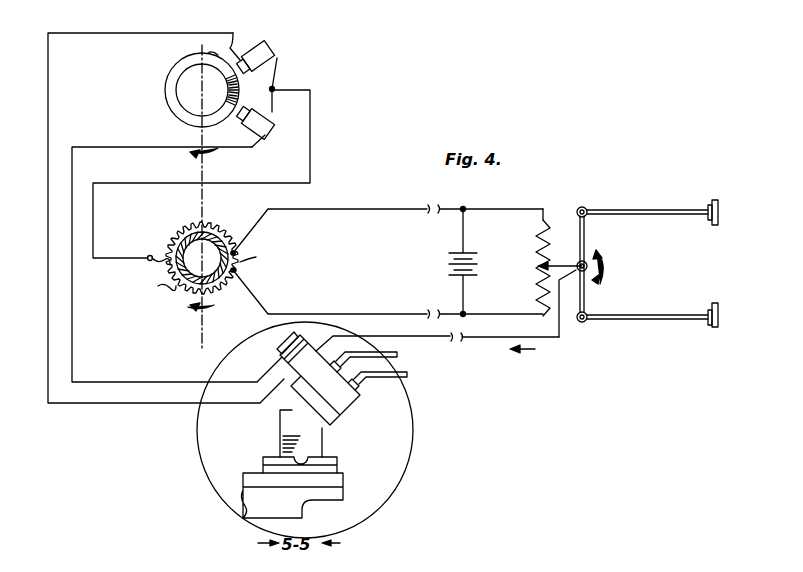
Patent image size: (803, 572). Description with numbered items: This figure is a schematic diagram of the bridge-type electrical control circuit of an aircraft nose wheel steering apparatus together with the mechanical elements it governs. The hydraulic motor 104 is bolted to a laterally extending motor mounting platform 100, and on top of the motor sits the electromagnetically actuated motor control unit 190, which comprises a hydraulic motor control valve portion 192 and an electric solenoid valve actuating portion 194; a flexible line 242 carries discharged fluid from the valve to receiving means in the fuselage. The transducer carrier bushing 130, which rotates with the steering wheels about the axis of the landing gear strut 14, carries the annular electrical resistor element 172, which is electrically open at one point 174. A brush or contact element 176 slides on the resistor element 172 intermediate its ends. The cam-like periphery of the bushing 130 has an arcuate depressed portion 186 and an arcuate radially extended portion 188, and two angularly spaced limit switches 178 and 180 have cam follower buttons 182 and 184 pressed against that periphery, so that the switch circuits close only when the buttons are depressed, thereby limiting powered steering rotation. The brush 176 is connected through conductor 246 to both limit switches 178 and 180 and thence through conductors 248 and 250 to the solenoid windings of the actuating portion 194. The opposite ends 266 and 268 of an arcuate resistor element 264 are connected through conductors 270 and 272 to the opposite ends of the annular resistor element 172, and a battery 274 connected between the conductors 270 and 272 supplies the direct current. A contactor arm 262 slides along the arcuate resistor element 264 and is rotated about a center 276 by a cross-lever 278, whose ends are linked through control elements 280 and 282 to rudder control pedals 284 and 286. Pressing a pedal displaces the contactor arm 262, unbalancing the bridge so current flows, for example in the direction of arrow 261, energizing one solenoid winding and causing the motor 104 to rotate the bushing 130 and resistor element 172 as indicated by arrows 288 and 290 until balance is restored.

The landing gear strut 14 is at (212, 226).
The motor mounting platform 100 is at (250, 506).
The hydraulic motor 104 is at (272, 438).
The transducer carrier bushing 130 is at (166, 57).
The annular electrical resistor element 172 is at (165, 287).
The open point of resistor element 174 is at (256, 257).
The brush or contact element 176 is at (156, 256).
The limit switch 178 is at (274, 50).
The limit switch 180 is at (276, 128).
The cam follower button 182 is at (254, 80).
The cam follower button 184 is at (272, 101).
The arcuate depressed portion 186 is at (162, 102).
The arcuate cam-like radially extended portion 188 is at (230, 44).
The motor control unit 190 is at (358, 418).
The hydraulic motor control valve portion 192 is at (354, 394).
The electric solenoid valve actuating portion 194 is at (280, 342).
The flexible line 242 is at (396, 377).
The conductor 246 is at (310, 160).
The conductor 248 is at (140, 147).
The conductor 250 is at (184, 33).
The current direction arrow 261 is at (528, 352).
The contactor arm 262 is at (548, 262).
The arcuate resistor element 264 is at (536, 302).
The end of resistor element 266 is at (546, 220).
The end of resistor element 268 is at (557, 338).
The conductor 270 is at (235, 249).
The conductor 272 is at (236, 272).
The battery 274 is at (436, 269).
The center 276 is at (600, 278).
The cross-lever 278 is at (588, 310).
The control element 280 is at (670, 210).
The control element 282 is at (640, 319).
The rudder control pedal 284 is at (718, 209).
The rudder control pedal 286 is at (720, 325).
The rotation arrow 288 is at (216, 152).
The rotation arrow 290 is at (200, 313).